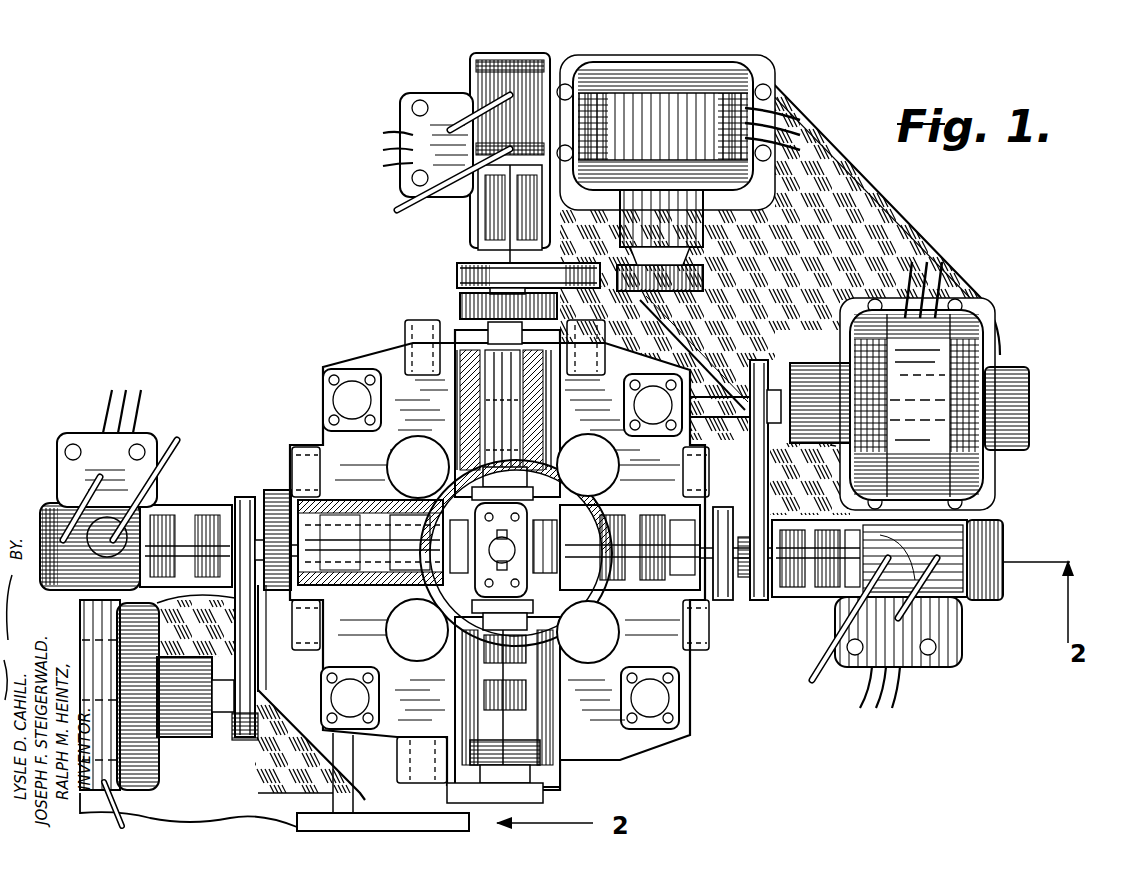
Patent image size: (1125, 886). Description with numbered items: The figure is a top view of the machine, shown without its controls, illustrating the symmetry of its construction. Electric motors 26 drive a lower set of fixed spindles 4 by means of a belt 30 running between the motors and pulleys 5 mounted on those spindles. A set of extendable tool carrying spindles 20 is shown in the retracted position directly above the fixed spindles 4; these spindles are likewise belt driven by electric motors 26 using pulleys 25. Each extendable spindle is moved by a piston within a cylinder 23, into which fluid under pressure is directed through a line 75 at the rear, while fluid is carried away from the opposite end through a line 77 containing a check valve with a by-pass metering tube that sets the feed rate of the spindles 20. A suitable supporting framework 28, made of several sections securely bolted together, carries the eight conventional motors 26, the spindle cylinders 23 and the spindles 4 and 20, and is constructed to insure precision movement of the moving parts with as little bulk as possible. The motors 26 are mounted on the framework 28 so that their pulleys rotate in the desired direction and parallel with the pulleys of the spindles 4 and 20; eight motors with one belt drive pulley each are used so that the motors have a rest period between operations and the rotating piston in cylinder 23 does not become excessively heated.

The lower set of spindles 4 is at (448, 482).
The pulleys 5 is at (465, 301).
The extendable tool carrying spindles 20 is at (548, 502).
The cylinder 23 is at (957, 620).
The pulleys 25 is at (462, 286).
The electric motors 26 is at (448, 84).
The supporting framework 28 is at (912, 228).
The belt 30 is at (462, 272).
The line 75 is at (445, 128).
The line 77 is at (397, 210).